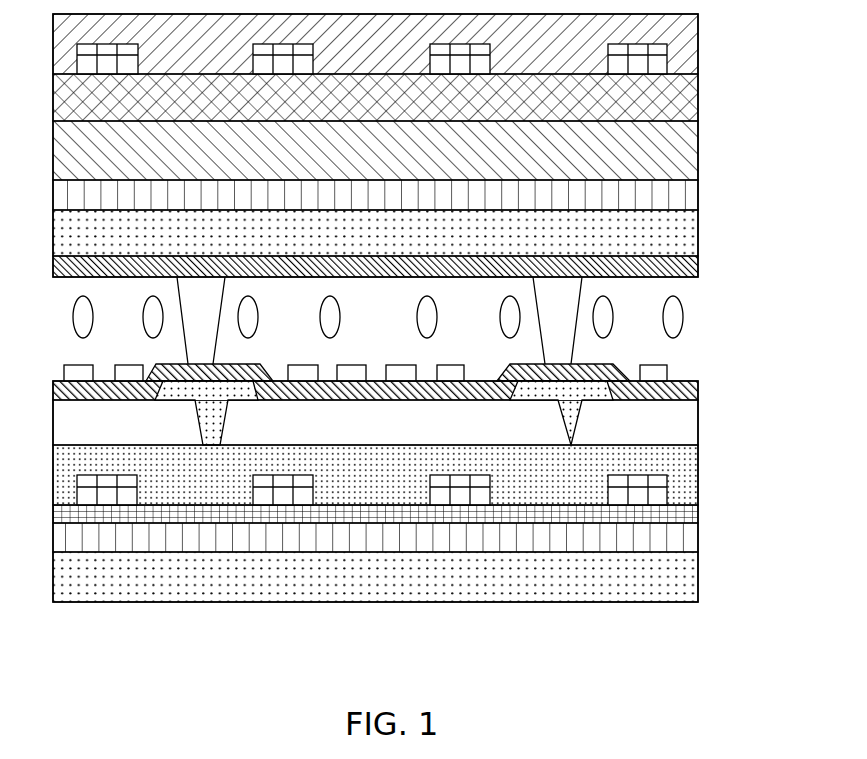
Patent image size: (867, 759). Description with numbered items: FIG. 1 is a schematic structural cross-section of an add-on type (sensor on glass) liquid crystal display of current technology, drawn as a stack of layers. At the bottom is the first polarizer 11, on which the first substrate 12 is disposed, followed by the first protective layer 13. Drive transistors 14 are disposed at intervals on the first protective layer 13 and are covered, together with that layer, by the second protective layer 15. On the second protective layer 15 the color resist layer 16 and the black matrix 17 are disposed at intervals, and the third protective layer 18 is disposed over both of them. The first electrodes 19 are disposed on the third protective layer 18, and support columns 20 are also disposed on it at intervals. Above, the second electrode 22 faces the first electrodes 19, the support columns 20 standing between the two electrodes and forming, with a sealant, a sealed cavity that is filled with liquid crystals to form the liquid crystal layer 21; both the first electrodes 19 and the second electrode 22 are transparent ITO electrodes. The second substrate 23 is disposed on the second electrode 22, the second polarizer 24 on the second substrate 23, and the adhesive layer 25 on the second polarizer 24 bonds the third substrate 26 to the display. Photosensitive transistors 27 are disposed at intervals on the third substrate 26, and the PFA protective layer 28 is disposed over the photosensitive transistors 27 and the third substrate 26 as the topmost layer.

The first polarizer 11 is at (688, 580).
The first substrate 12 is at (683, 545).
The first protective layer 13 is at (688, 514).
The drive transistors 14 is at (657, 495).
The second protective layer 15 is at (678, 458).
The color resist layer 16 is at (676, 427).
The black matrix 17 is at (196, 384).
The third protective layer 18 is at (690, 392).
The first electrodes 19 is at (667, 372).
The support columns 20 is at (567, 316).
The liquid crystal layer 21 is at (681, 326).
The second electrode 22 is at (692, 264).
The second substrate 23 is at (681, 232).
The second polarizer 24 is at (697, 187).
The adhesive layer 25 is at (678, 159).
The third substrate 26 is at (678, 104).
The photosensitive transistors 27 is at (656, 63).
The PFA protective layer 28 is at (678, 32).